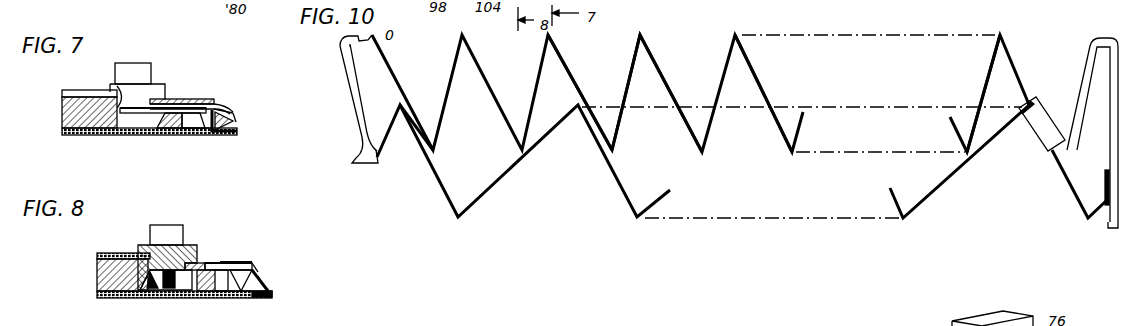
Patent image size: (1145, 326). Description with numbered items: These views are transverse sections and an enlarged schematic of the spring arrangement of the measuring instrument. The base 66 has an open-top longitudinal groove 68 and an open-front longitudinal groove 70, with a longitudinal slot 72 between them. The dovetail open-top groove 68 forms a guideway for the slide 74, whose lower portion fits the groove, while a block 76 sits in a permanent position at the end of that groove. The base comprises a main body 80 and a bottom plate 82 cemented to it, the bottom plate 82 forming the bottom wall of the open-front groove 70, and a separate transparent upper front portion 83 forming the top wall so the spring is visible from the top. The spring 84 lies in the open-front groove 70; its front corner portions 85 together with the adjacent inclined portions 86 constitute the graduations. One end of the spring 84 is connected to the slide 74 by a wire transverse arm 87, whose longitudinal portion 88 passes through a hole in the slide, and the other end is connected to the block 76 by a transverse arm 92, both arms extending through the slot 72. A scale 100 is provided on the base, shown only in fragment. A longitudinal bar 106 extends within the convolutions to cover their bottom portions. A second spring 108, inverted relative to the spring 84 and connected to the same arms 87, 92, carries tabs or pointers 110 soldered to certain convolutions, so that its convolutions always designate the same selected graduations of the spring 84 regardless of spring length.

In FIG. 7, the base 66 is at (62, 132).
In FIG. 8, the base 66 is at (97, 293).
In FIG. 7, the open-top longitudinal groove 68 is at (119, 92).
In FIG. 7, the open-front longitudinal groove 70 is at (196, 104).
In FIG. 8, the open-front longitudinal groove 70 is at (222, 264).
In FIG. 7, the longitudinal slot 72 is at (171, 108).
In FIG. 8, the longitudinal slot 72 is at (198, 264).
In FIG. 7, the slide 74 is at (157, 87).
In FIG. 8, the slide 74 is at (186, 246).
In FIG. 7, the block 76 is at (131, 64).
In FIG. 8, the block 76 is at (161, 225).
In FIG. 7, the main body 80 is at (62, 114).
In FIG. 8, the main body 80 is at (97, 270).
In FIG. 7, the bottom plate 82 is at (181, 129).
In FIG. 8, the bottom plate 82 is at (205, 292).
In FIG. 7, the upper front portion 83 is at (212, 99).
In FIG. 8, the upper front portion 83 is at (238, 262).
In FIG. 7, the spring 84 is at (237, 131).
In FIG. 8, the spring 84 is at (258, 275).
In FIG. 10, the spring 84 is at (652, 44).
In FIG. 8, the front corner portions 85 is at (272, 295).
In FIG. 10, the front corner portions 85 is at (464, 36).
In FIG. 7, the inclined portions 86 is at (236, 120).
In FIG. 8, the inclined portions 86 is at (266, 284).
In FIG. 10, the inclined portions 86 is at (568, 70).
In FIG. 7, the transverse arm 87 is at (186, 120).
In FIG. 10, the transverse arm 87 is at (1118, 104).
In FIG. 8, the longitudinal portion 88 is at (146, 290).
In FIG. 10, the transverse arm 92 is at (349, 84).
In FIG. 10, the scale 100 is at (1002, 37).
In FIG. 7, the longitudinal bar 106 is at (233, 121).
In FIG. 8, the longitudinal bar 106 is at (255, 281).
In FIG. 7, the second spring 108 is at (200, 130).
In FIG. 8, the second spring 108 is at (222, 292).
In FIG. 10, the second spring 108 is at (628, 213).
In FIG. 7, the tabs or pointers 110 is at (222, 109).
In FIG. 8, the tabs or pointers 110 is at (253, 266).
In FIG. 10, the tabs or pointers 110 is at (1040, 140).